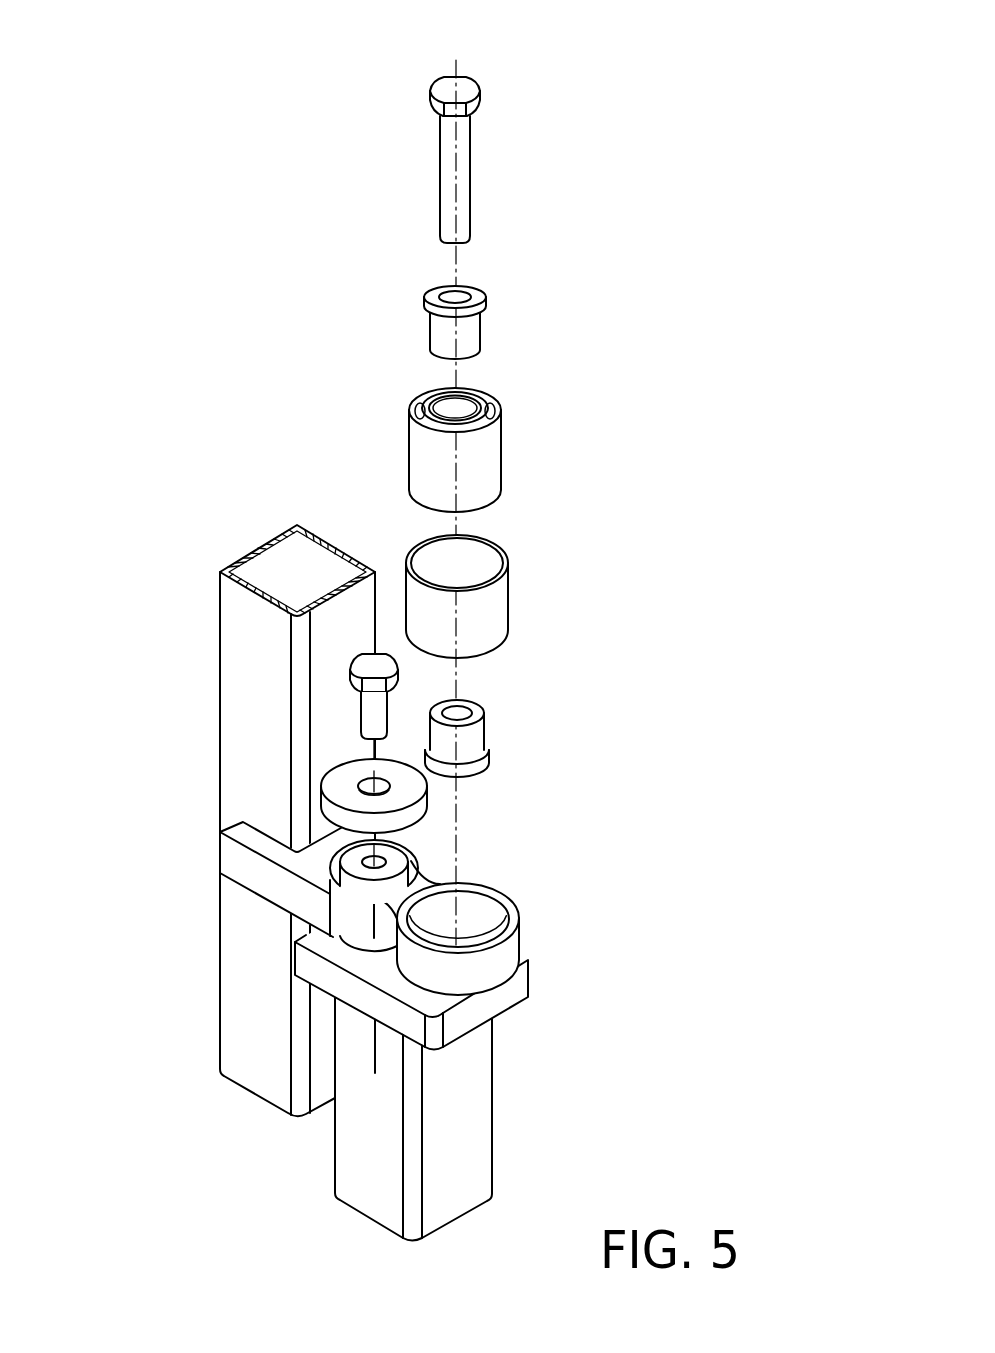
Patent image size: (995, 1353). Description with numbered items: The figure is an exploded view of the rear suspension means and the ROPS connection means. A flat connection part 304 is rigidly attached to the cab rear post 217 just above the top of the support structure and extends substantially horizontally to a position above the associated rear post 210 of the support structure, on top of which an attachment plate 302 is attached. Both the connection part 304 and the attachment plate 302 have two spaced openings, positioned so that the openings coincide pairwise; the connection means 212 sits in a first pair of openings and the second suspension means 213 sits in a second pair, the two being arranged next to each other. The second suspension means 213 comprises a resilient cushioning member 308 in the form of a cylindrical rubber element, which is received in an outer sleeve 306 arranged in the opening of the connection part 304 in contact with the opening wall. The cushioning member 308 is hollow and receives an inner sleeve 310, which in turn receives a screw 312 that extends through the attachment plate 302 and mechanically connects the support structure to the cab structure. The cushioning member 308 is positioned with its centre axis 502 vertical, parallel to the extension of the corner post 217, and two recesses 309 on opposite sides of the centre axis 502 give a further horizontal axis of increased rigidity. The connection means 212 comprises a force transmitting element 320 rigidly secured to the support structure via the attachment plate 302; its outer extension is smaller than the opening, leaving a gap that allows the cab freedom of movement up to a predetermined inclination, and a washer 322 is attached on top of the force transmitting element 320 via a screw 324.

The rear post 210 is at (458, 1135).
The connection means 212 is at (330, 735).
The second suspension means 213 is at (428, 72).
The rear post 217 is at (237, 966).
The attachment plate 302 is at (520, 993).
The connection part 304 is at (512, 946).
The outer sleeve 306 is at (500, 608).
The resilient cushioning member 308 is at (493, 462).
The recesses 309 is at (493, 413).
The inner sleeve 310 is at (477, 335).
The screw 312 is at (463, 184).
The force transmitting element 320 is at (373, 862).
The washer 322 is at (335, 788).
The screw 324 is at (367, 708).
The centre axis 502 is at (470, 830).